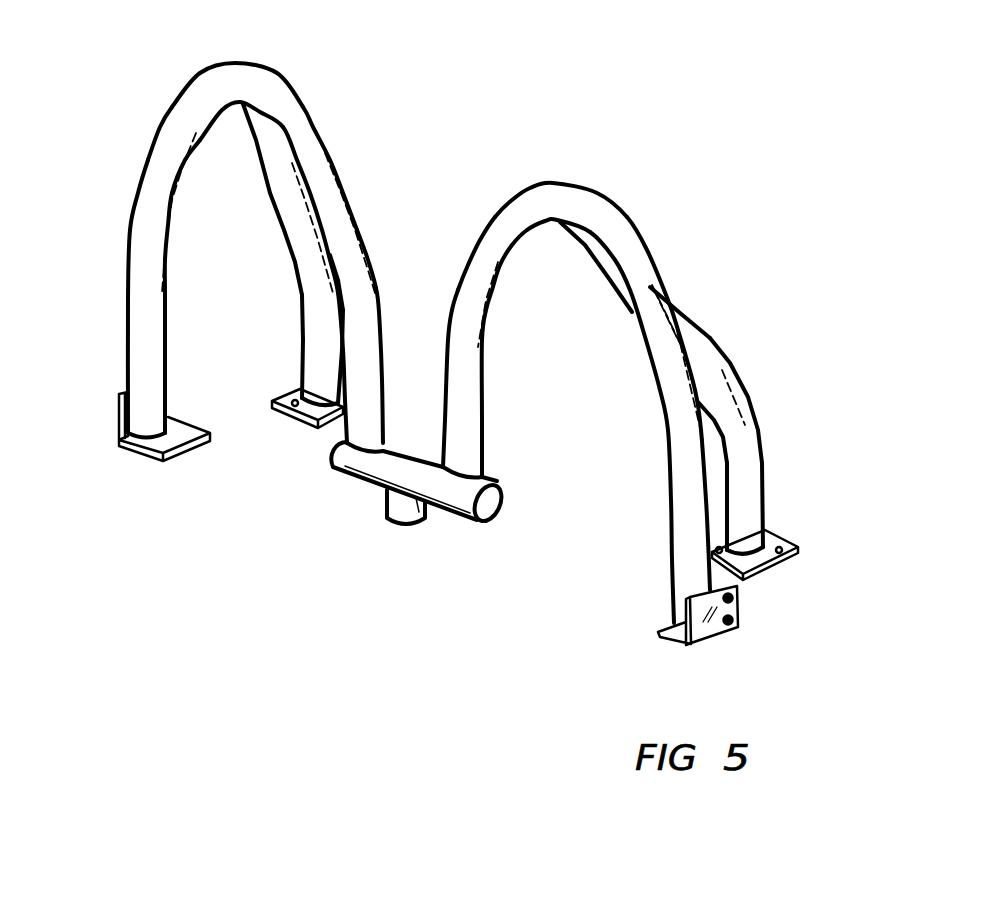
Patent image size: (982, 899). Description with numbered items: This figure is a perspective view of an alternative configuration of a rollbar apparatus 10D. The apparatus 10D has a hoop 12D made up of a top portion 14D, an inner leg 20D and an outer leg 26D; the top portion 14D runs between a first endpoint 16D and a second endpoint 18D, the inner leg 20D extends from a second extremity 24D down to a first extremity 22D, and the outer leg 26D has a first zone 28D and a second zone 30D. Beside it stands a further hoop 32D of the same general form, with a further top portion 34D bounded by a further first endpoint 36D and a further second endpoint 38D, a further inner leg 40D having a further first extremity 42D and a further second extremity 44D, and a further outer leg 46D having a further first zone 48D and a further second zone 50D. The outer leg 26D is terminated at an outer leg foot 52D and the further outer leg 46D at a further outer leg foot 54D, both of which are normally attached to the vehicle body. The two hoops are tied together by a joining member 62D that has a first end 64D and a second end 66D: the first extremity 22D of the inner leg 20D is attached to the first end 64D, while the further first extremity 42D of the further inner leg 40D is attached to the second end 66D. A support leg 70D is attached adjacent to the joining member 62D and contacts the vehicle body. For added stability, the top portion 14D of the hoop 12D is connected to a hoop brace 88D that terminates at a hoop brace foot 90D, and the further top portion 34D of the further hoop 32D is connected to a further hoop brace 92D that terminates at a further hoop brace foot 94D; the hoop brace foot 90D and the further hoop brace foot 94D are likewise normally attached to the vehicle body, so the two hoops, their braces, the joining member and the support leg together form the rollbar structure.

The rollbar apparatus 10D is at (454, 346).
The hoop 12D is at (583, 366).
The top portion 14D is at (566, 184).
The first endpoint 16D is at (470, 300).
The second endpoint 18D is at (720, 388).
The inner leg 20D is at (487, 393).
The first extremity 22D is at (490, 458).
The second extremity 24D is at (521, 240).
The outer leg 26D is at (693, 497).
The first zone 28D is at (684, 575).
The second zone 30D is at (690, 448).
The further hoop 32D is at (230, 246).
The further top portion 34D is at (245, 78).
The further first endpoint 36D is at (332, 254).
The further second endpoint 38D is at (158, 182).
The further inner leg 40D is at (363, 372).
The further first extremity 42D is at (360, 421).
The further second extremity 44D is at (360, 307).
The further outer leg 46D is at (145, 290).
The further first zone 48D is at (143, 360).
The further second zone 50D is at (148, 234).
The outer leg foot 52D is at (715, 628).
The further outer leg foot 54D is at (153, 453).
The joining member 62D is at (398, 473).
The first end 64D is at (461, 518).
The second end 66D is at (377, 533).
The support leg 70D is at (400, 518).
The hoop brace 88D is at (700, 340).
The hoop brace foot 90D is at (757, 565).
The further hoop brace 92D is at (312, 275).
The further hoop brace foot 94D is at (300, 388).